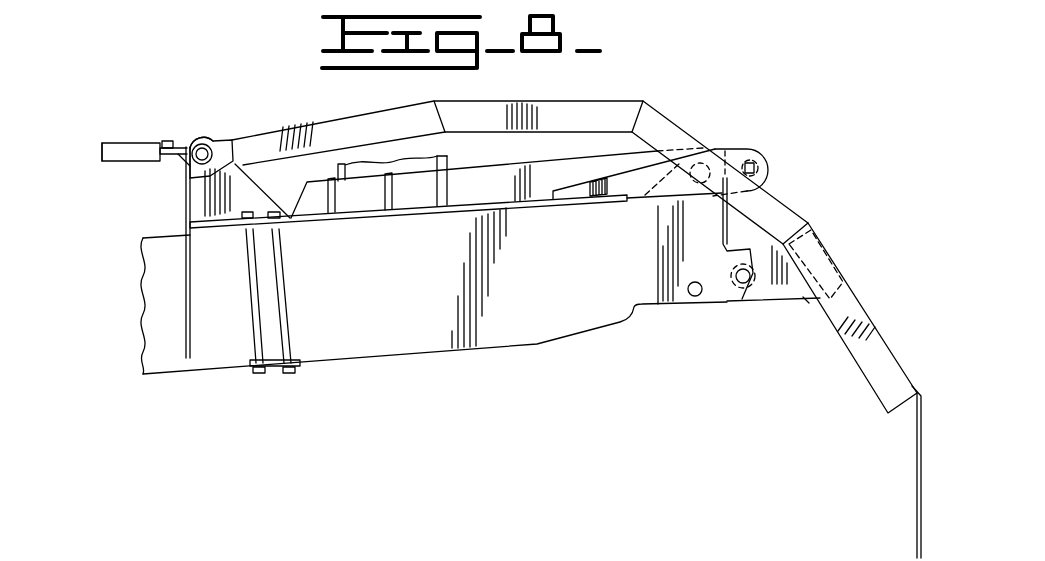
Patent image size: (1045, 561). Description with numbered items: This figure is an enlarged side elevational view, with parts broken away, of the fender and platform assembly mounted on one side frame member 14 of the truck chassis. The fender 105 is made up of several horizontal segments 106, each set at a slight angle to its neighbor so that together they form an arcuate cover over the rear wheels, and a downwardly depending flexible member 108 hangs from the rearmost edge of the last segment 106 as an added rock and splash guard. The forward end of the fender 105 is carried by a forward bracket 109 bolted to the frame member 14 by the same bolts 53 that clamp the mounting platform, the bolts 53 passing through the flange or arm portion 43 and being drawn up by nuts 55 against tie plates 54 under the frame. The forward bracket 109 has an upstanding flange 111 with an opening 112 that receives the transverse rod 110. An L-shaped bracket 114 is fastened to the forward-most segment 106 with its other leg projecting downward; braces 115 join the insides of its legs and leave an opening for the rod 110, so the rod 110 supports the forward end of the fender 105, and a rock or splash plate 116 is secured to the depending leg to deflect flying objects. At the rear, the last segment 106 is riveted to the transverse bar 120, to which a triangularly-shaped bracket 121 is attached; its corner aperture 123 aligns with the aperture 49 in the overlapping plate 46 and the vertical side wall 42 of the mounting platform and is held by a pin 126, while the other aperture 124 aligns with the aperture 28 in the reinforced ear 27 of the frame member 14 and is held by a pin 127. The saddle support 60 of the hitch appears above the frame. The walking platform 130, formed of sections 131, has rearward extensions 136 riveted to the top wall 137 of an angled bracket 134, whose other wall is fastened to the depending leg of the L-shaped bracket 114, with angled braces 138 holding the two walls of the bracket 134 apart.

The side frame member 14 is at (527, 322).
The reinforced ear 27 is at (718, 301).
The aperture 28 is at (743, 283).
The vertical side wall 42 is at (483, 180).
The flange or arm portion 43 is at (538, 204).
The overlapping plate 46 is at (593, 178).
The aperture 49 is at (757, 168).
The bolt 53 is at (251, 297).
The tie plate 54 is at (253, 370).
The nut 55 is at (290, 373).
The saddle support 60 is at (418, 170).
The fender 105 is at (595, 97).
The horizontal segment 106 is at (330, 130).
The flexible member 108 is at (918, 522).
The forward bracket 109 is at (218, 236).
The transverse rod 110 is at (200, 143).
The upstanding flange 111 is at (250, 200).
The opening 112 is at (214, 140).
The L-shaped bracket 114 is at (230, 138).
The brace 115 is at (186, 204).
The rock or splash plate 116 is at (180, 272).
The transverse bar 120 is at (843, 273).
The triangularly-shaped bracket 121 is at (807, 300).
The aperture 123 is at (740, 153).
The aperture 124 is at (750, 288).
The pin 126 is at (772, 173).
The pin 127 is at (728, 263).
The walking platform 130 is at (125, 163).
The section 131 is at (120, 142).
The angled bracket 134 is at (188, 137).
The rearward extension 136 is at (162, 141).
The top wall 137 is at (186, 145).
The angled brace 138 is at (182, 156).